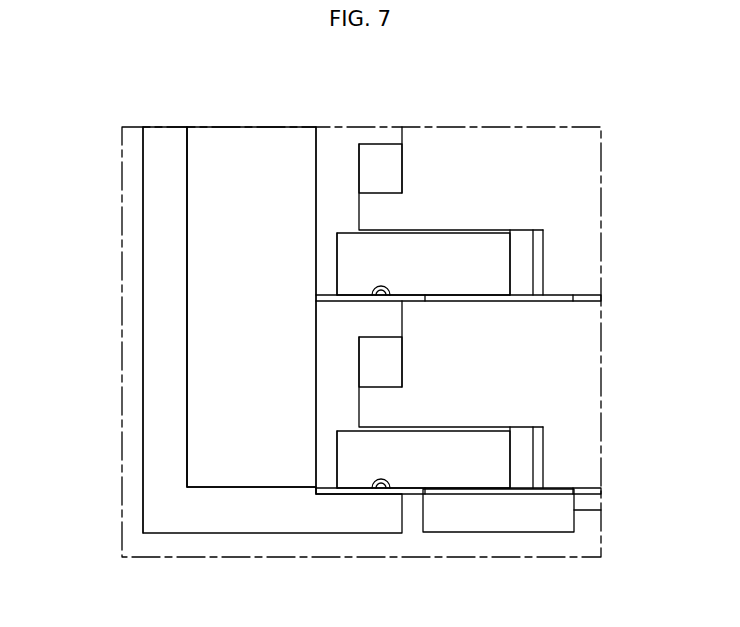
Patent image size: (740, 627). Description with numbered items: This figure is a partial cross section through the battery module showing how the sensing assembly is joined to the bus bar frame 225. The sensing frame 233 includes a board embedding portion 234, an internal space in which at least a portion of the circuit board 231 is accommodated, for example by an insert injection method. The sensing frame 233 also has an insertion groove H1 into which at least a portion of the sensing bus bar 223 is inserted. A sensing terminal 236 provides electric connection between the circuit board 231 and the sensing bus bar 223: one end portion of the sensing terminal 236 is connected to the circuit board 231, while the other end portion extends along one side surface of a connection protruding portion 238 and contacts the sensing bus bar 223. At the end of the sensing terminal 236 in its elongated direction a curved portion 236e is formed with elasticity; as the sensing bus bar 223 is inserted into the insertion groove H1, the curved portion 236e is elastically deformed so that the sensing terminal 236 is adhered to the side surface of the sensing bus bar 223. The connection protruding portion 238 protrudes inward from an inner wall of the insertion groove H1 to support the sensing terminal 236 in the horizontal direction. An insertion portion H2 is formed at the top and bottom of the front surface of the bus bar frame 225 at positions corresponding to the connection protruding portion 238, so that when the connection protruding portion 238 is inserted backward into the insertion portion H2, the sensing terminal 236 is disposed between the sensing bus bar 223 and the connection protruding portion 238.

The bus bar frame 225 is at (560, 113).
The circuit board 231 is at (241, 149).
The sensing frame 233 is at (143, 183).
The board embedding portion 234 is at (187, 430).
The sensing bus bar 223 is at (354, 244).
The sensing terminal 236 is at (347, 302).
The curved portion 236e is at (388, 290).
The connection protruding portion 238 is at (402, 320).
The insertion groove H1 is at (323, 275).
The insertion portion H2 is at (384, 176).